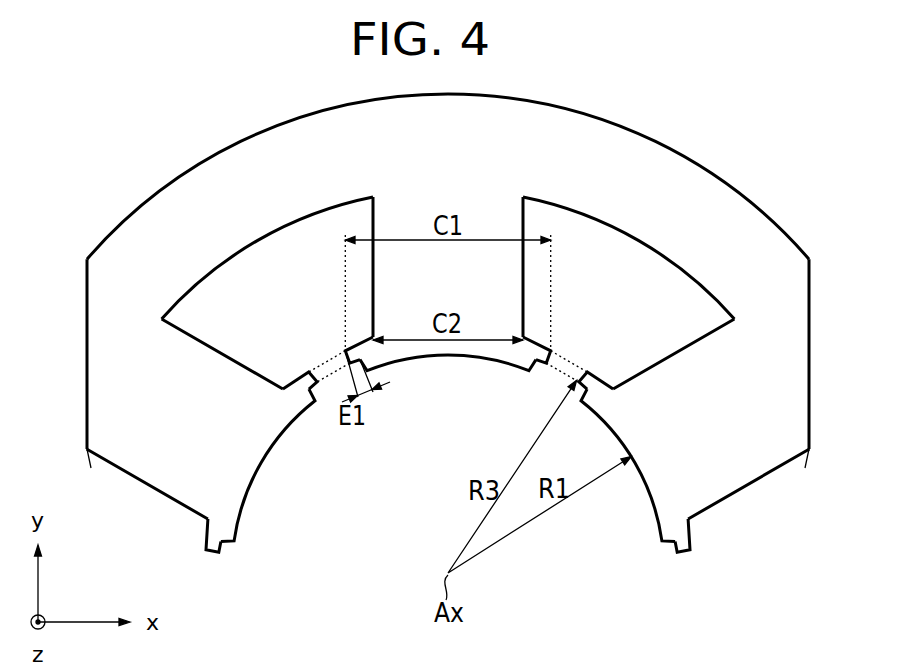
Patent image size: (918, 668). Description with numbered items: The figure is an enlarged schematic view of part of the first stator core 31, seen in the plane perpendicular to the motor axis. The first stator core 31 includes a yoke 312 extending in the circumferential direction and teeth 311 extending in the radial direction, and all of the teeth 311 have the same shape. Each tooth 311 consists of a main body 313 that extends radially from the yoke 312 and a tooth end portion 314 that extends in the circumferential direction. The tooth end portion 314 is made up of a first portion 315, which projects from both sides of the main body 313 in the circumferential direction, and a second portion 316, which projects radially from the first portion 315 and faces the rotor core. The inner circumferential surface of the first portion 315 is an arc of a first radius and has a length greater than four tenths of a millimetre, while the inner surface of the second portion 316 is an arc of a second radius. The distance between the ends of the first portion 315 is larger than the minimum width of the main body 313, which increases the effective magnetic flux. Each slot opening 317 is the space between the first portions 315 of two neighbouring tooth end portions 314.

The first stator core 31 is at (454, 340).
The tooth 311 is at (448, 399).
The yoke 312 is at (454, 310).
The main body 313 is at (187, 402).
The tooth end portion 314 is at (448, 469).
The first portion 315 is at (530, 363).
The second portion 316 is at (518, 366).
The slot opening 317 is at (330, 362).